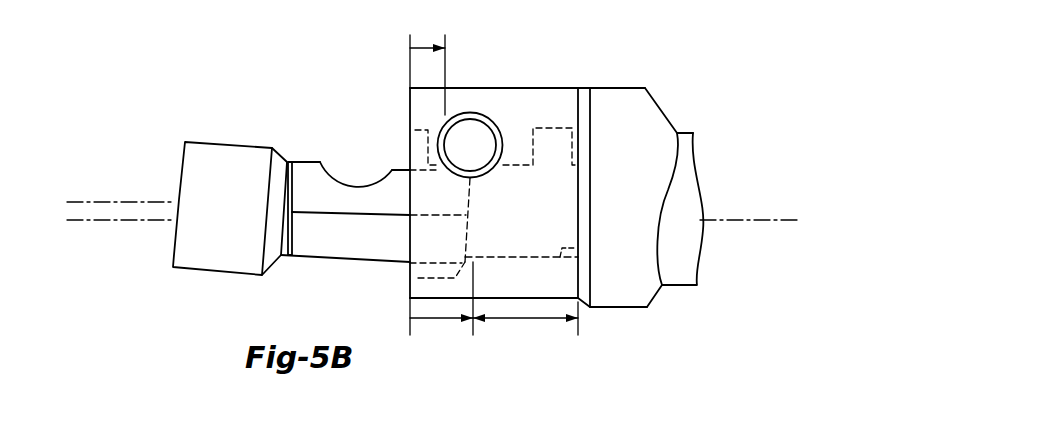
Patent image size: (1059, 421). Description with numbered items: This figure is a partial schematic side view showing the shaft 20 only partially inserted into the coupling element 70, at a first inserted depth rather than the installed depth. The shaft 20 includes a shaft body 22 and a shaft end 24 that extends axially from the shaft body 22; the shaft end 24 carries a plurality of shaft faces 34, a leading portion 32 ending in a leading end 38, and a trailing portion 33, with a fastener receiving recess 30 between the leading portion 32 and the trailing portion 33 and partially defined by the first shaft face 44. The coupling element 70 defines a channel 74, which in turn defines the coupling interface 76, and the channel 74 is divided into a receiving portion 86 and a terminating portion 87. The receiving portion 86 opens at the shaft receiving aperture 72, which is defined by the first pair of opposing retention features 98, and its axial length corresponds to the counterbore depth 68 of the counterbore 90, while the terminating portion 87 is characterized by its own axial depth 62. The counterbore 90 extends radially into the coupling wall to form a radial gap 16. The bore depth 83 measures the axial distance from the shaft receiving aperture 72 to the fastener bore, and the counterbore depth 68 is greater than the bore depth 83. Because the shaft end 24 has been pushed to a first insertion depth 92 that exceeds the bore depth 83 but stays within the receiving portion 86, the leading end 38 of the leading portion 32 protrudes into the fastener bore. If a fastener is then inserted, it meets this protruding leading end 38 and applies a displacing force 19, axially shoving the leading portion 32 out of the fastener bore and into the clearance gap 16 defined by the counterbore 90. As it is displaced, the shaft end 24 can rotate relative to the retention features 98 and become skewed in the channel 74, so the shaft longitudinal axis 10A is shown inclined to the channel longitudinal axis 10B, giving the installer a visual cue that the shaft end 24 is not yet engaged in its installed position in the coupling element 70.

The shaft longitudinal axis 10A is at (98, 201).
The channel longitudinal axis 10B is at (93, 224).
The shaft 20 is at (206, 197).
The shaft body 22 is at (202, 130).
The shaft end 24 is at (345, 199).
The fastener receiving recess 30 is at (353, 177).
The trailing portion 33 is at (300, 150).
The shaft faces 34 is at (312, 247).
The first shaft face 44 is at (358, 206).
The shaft receiving aperture 72 is at (408, 237).
The radial gap 16 is at (435, 268).
The counterbore 90 is at (410, 278).
The receiving portion 86 is at (433, 172).
The first pair of opposing retention features 98 is at (415, 127).
The bore depth 83 is at (412, 47).
The displacing force 19 is at (477, 153).
The leading end 38 is at (486, 161).
The leading portion 32 is at (500, 177).
The channel 74 is at (553, 195).
The coupling interface 76 is at (564, 225).
The terminating portion 87 is at (578, 258).
The coupling element 70 is at (673, 97).
The counterbore depth 68 is at (441, 315).
The first insertion depth 92 is at (438, 320).
The axial depth 62 is at (520, 320).